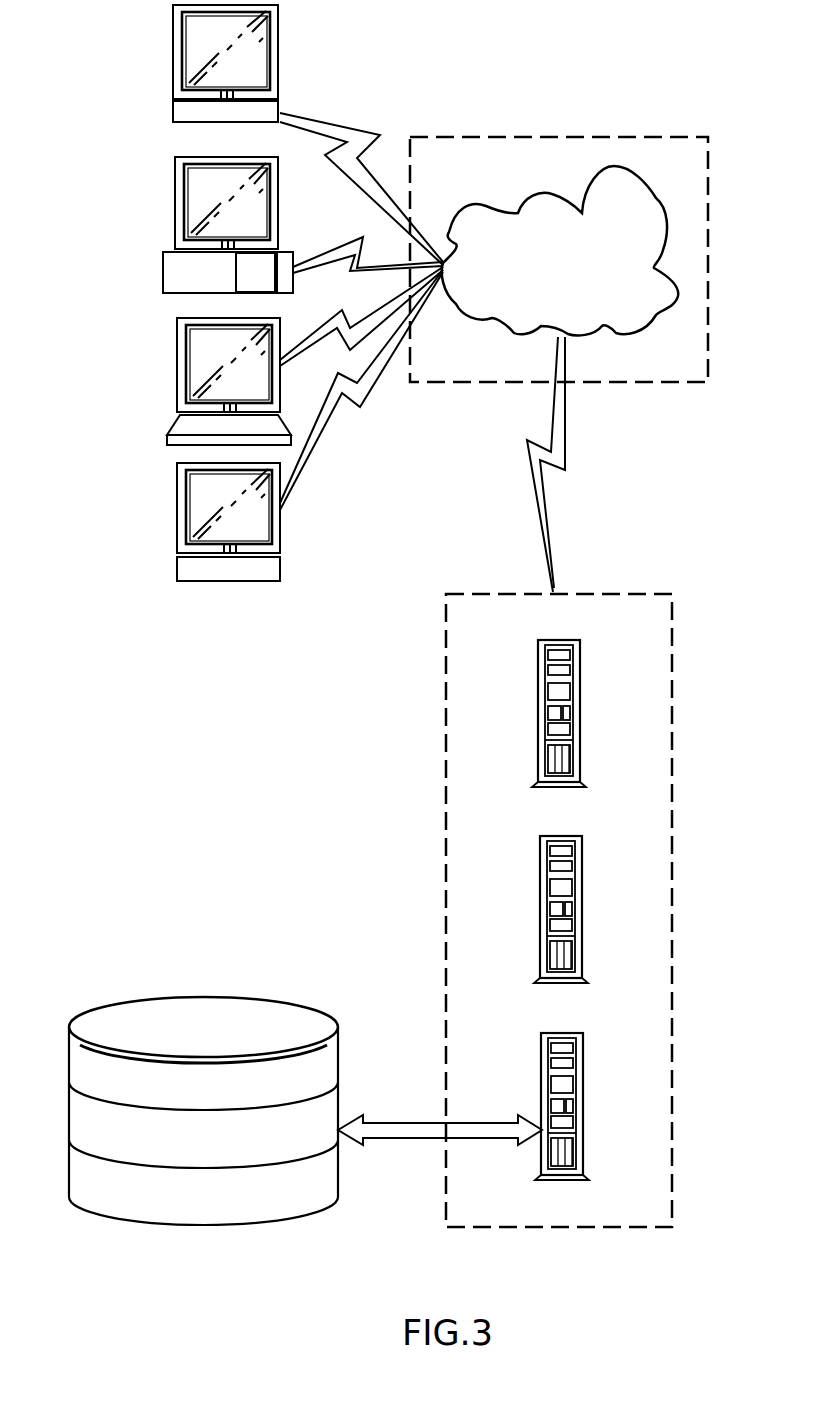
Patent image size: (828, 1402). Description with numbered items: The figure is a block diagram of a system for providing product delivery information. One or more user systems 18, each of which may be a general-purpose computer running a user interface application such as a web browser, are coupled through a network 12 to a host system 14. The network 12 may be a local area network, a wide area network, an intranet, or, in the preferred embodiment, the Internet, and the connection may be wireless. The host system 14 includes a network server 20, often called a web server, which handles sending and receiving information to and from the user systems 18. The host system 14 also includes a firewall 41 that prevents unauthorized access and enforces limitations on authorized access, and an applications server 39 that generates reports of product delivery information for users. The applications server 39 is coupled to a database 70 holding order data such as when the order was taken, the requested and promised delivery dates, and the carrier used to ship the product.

The user system 18 is at (172, 55).
The network 12 is at (582, 136).
The host system 14 is at (672, 652).
The network server 20 is at (582, 656).
The firewall 41 is at (582, 851).
The applications server 39 is at (584, 1047).
The database 70 is at (205, 1003).